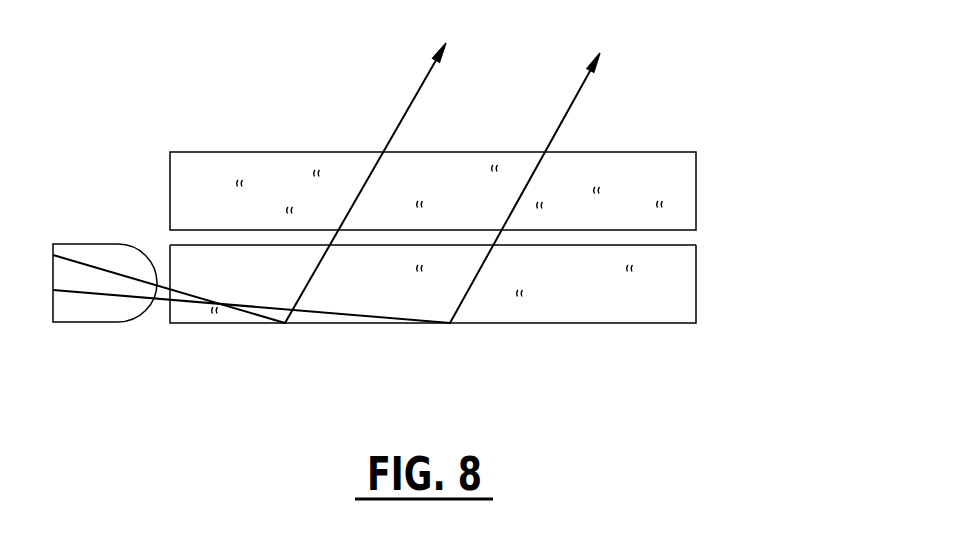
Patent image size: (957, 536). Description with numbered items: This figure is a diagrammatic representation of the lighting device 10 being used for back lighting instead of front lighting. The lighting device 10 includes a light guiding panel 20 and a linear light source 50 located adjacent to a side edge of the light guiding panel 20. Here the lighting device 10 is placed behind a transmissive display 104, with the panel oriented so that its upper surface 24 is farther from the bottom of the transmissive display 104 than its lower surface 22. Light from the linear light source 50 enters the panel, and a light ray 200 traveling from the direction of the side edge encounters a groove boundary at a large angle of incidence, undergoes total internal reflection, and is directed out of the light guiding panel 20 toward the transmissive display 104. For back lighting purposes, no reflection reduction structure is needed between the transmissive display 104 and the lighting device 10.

The lighting device 10 is at (148, 364).
The linear light source 50 is at (108, 257).
The light ray 200 is at (402, 125).
The transmissive display 104 is at (662, 197).
The light guiding panel 20 is at (572, 308).
The upper surface 22 is at (720, 318).
The lower surface 24 is at (720, 247).